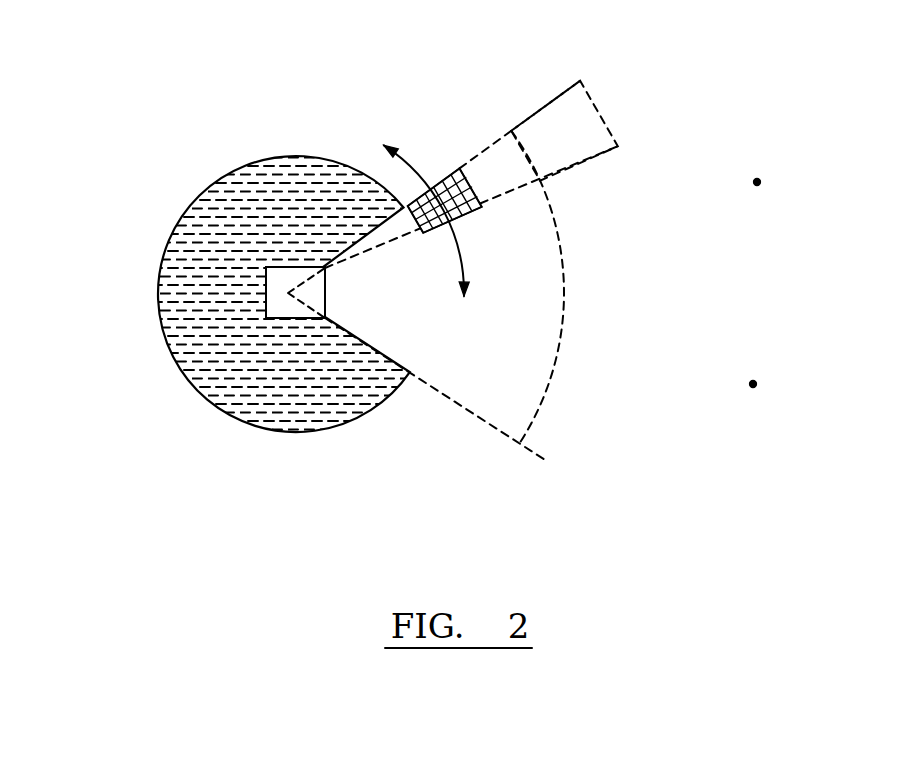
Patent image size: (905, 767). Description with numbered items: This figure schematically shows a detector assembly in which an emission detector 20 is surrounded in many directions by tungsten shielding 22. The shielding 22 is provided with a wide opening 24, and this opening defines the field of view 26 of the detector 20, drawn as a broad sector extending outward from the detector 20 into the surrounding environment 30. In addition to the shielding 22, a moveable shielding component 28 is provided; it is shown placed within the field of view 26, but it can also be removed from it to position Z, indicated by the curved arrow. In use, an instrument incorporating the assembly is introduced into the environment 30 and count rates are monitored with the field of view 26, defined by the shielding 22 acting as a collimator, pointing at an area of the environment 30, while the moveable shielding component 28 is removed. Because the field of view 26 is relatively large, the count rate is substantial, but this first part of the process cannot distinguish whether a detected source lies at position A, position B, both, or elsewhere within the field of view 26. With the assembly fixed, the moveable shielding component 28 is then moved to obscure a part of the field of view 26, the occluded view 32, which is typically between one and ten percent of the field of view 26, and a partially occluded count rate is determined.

The emission detector 20 is at (284, 313).
The tungsten shielding 22 is at (205, 246).
The wide opening 24 is at (417, 322).
The field of view 26 is at (506, 302).
The moveable shielding component 28 is at (441, 186).
The environment 30 is at (137, 85).
The occluded view 32 is at (568, 132).
The position Z is at (348, 147).
The position A is at (774, 172).
The position B is at (768, 400).